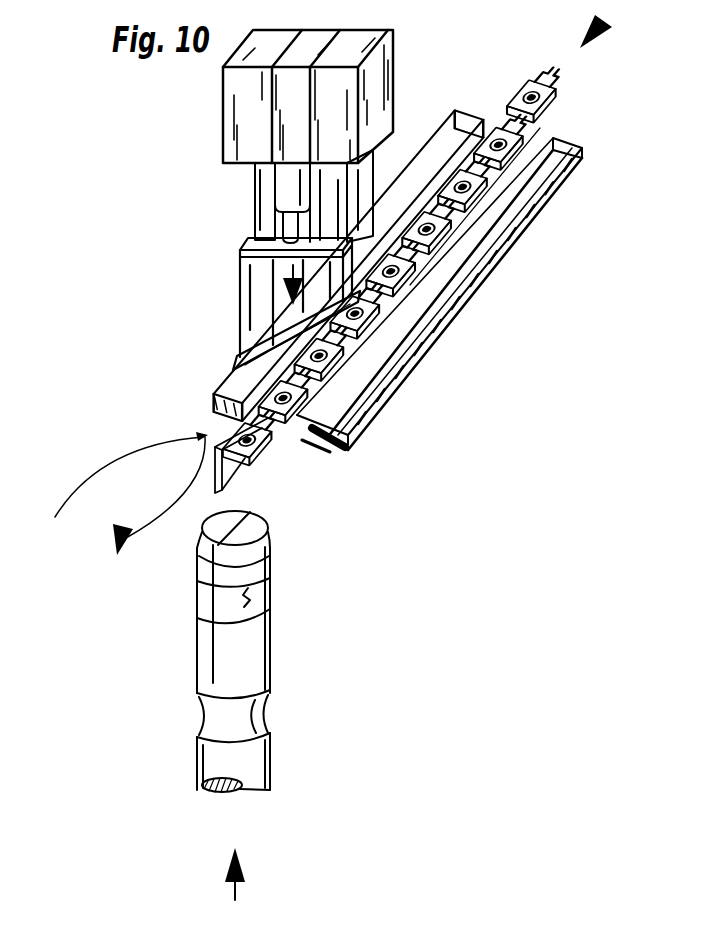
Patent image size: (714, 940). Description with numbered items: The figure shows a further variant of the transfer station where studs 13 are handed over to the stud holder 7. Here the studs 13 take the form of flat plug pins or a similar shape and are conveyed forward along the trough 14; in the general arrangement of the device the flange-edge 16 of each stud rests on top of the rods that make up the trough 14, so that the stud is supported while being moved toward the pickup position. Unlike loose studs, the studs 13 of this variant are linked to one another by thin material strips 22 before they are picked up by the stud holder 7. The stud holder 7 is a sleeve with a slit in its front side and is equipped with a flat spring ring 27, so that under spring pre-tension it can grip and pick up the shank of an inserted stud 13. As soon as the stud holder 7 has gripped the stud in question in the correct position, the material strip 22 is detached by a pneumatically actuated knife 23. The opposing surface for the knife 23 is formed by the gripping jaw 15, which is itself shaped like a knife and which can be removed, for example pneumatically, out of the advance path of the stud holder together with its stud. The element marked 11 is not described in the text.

The stud holder 7 is at (262, 670).
The front holder clip 11 is at (238, 432).
The stud 13 is at (227, 467).
The trough 14 is at (460, 122).
The gripping jaw 15 is at (295, 443).
The flange-edge 16 is at (562, 101).
The material strip 22 is at (242, 363).
The knife 23 is at (252, 281).
The flat spring ring 27 is at (266, 586).